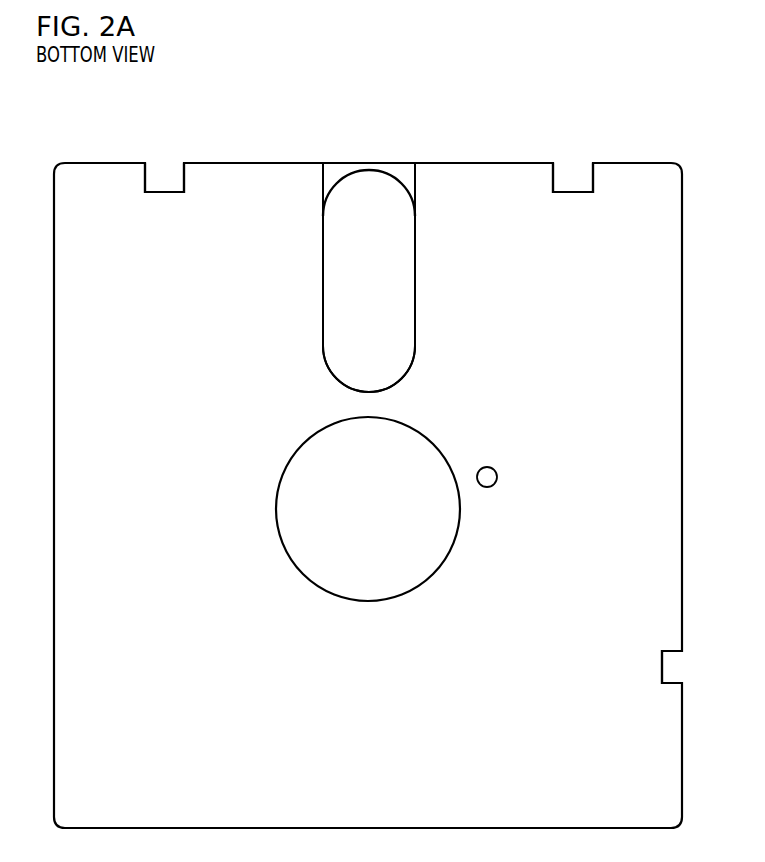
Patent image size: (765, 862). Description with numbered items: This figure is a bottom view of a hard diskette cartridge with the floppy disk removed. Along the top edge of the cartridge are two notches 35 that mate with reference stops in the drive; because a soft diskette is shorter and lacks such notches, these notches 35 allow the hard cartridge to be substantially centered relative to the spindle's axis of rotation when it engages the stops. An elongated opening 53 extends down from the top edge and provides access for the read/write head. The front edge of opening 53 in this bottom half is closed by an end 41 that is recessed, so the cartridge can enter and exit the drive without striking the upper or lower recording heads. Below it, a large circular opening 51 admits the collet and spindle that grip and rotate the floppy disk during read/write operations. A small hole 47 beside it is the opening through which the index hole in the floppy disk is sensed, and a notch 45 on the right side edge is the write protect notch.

The notches 35 is at (165, 172).
The end 41 is at (379, 163).
The opening 53 is at (395, 306).
The opening 51 is at (300, 491).
The hole 47 is at (489, 475).
The notch 45 is at (668, 670).